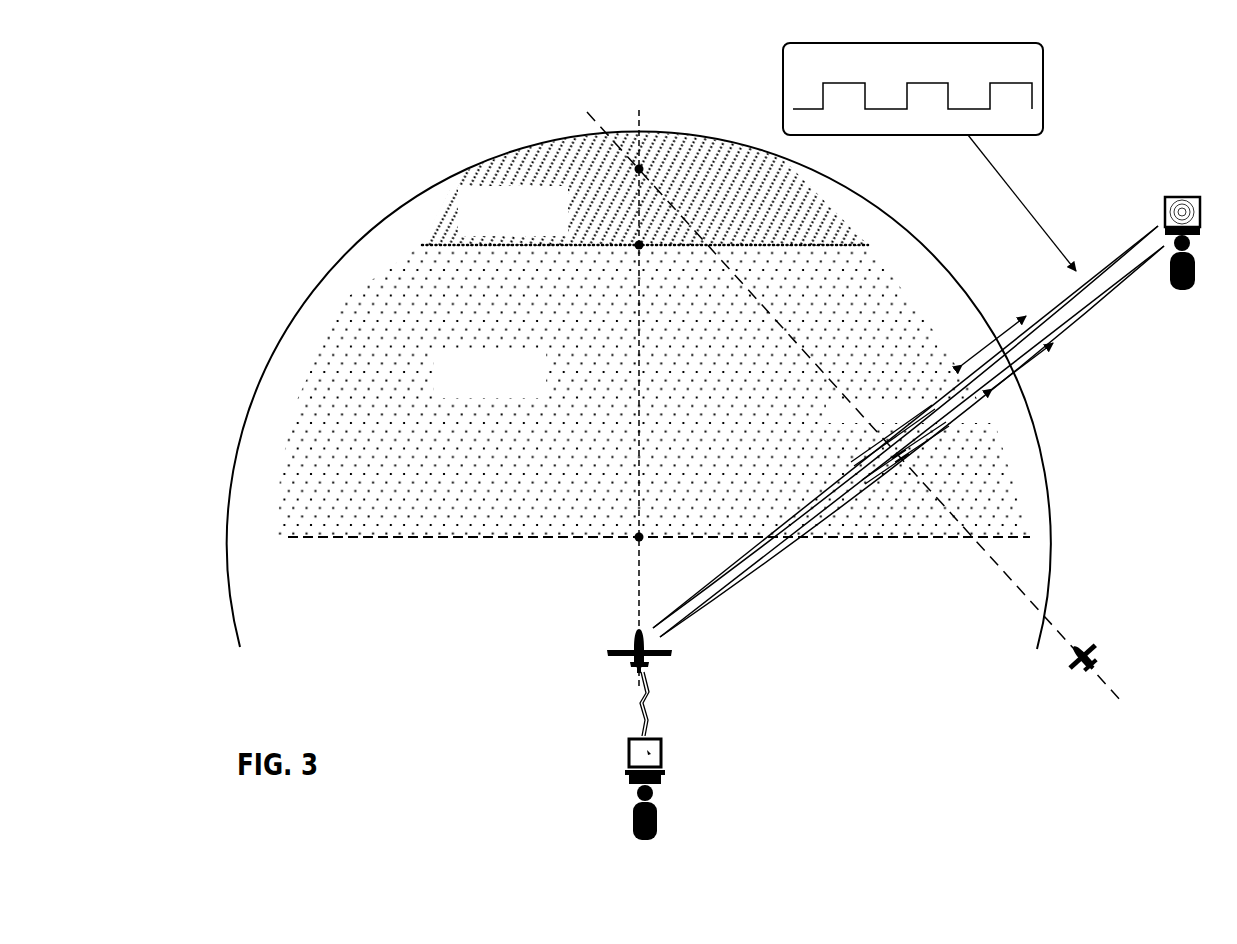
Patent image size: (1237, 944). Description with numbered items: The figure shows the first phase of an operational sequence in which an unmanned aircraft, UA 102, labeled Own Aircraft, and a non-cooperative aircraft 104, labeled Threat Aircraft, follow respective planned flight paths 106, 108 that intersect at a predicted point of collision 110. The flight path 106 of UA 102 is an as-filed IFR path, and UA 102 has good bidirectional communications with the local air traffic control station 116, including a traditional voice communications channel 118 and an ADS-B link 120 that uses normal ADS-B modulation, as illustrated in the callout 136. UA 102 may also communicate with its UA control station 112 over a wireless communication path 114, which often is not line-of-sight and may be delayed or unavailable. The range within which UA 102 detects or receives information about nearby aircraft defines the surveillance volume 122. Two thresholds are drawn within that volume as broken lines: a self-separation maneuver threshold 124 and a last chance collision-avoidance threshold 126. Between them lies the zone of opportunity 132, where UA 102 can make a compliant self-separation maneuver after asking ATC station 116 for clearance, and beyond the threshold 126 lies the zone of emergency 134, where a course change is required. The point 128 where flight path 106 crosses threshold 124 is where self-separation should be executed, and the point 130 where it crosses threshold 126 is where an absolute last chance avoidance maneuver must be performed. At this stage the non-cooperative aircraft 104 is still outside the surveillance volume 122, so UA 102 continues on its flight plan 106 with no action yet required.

The UA 102 is at (632, 636).
The non-cooperative aircraft 104 is at (1080, 640).
The planned flight path 106 is at (637, 600).
The planned flight path 108 is at (1012, 580).
The predicted point of collision 110 is at (650, 165).
The UA control station 112 is at (650, 738).
The wireless communication path 114 is at (637, 704).
The local air traffic control station 116 is at (1165, 213).
The voice communications channel 118 is at (1070, 317).
The ADS-B link 120 is at (1057, 303).
The surveillance volume 122 is at (368, 222).
The self-separation maneuver threshold 124 is at (355, 539).
The last chance collision-avoidance threshold 126 is at (440, 247).
The point 128 is at (637, 531).
The point 130 is at (631, 238).
The zone of opportunity 132 is at (388, 380).
The zone of emergency 134 is at (445, 207).
The callout 136 is at (1043, 69).